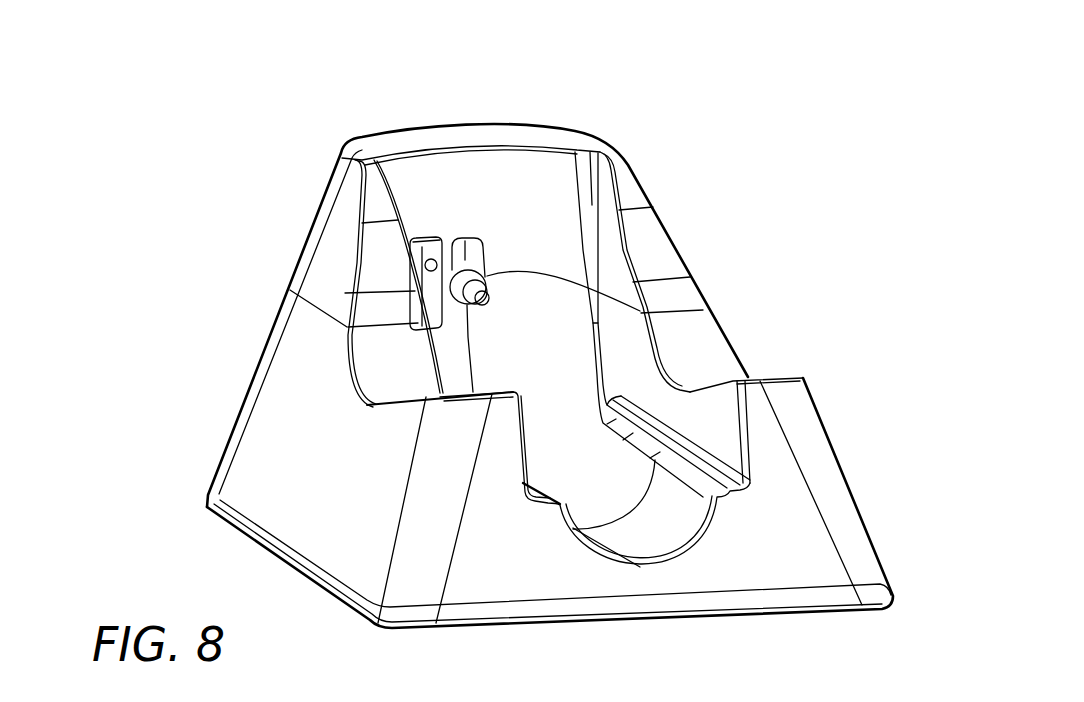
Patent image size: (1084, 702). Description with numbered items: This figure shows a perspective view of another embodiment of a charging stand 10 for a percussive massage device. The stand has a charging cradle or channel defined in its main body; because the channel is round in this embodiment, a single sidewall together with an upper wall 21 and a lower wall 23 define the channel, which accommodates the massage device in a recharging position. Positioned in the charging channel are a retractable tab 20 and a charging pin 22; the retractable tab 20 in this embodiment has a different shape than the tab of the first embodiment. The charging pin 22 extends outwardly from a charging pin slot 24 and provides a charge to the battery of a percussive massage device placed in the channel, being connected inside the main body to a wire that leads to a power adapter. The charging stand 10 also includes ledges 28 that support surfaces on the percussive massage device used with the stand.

The charging stand 10 is at (757, 272).
The retractable tab 20 is at (430, 247).
The upper wall 21 is at (550, 177).
The charging pin 22 is at (508, 295).
The lower wall 23 is at (640, 567).
The charging pin slot 24 is at (470, 248).
The ledges 28 is at (697, 470).